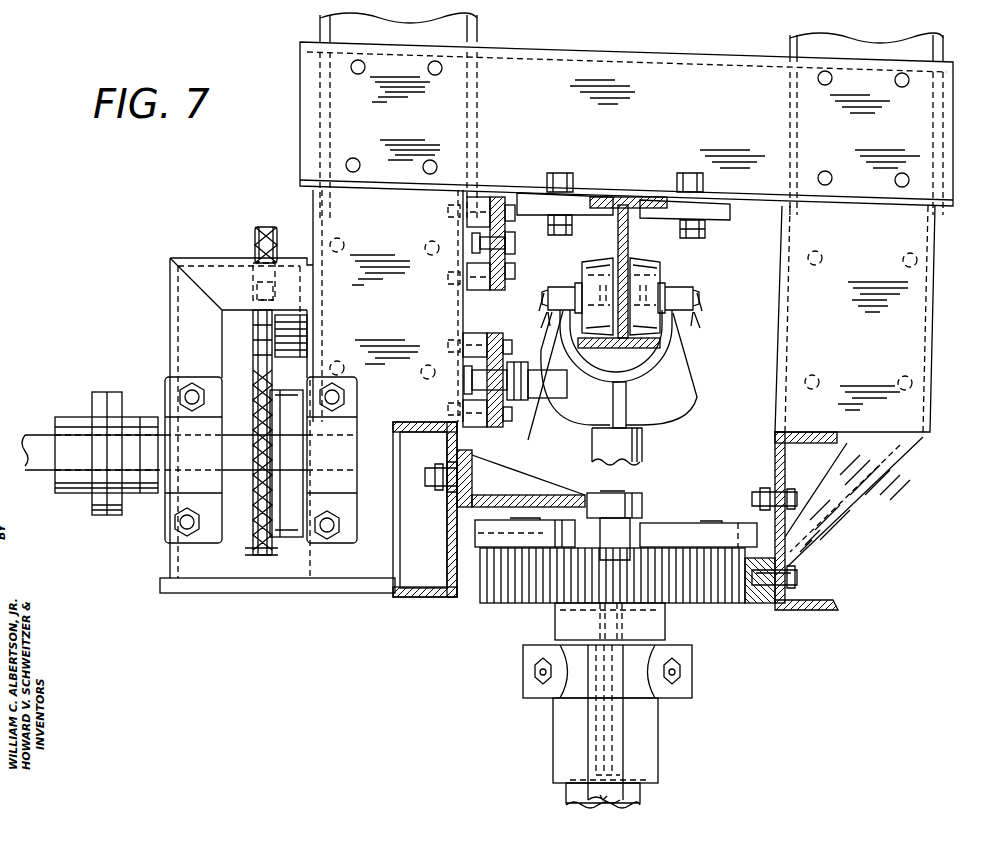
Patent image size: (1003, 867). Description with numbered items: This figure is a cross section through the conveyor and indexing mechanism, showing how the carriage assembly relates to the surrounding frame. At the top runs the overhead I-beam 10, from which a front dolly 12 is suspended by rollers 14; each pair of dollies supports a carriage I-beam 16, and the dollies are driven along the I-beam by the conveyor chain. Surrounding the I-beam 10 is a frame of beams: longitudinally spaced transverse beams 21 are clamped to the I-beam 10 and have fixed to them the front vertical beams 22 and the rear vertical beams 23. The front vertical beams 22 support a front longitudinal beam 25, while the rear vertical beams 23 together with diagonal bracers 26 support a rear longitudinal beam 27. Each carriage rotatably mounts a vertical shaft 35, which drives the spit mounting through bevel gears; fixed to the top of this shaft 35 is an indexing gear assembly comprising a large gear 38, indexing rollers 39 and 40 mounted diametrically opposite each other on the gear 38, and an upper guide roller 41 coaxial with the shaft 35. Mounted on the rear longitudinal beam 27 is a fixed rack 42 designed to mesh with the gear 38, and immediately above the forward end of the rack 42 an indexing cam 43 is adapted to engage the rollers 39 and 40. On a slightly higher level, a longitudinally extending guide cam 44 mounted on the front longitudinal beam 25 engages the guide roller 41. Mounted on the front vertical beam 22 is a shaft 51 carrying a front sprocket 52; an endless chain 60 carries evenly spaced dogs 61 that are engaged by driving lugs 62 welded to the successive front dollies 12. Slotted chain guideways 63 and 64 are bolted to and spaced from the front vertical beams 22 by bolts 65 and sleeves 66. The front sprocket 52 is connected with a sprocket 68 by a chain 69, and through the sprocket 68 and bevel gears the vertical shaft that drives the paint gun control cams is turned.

The overhead I-beam 10 is at (628, 268).
The dolly 12 is at (697, 410).
The rollers 14 is at (600, 262).
The carriage I-beam 16 is at (612, 728).
The transverse beams 21 is at (634, 52).
The front vertical beams 22 is at (322, 40).
The rear vertical beams 23 is at (950, 54).
The front longitudinal beam 25 is at (430, 598).
The diagonal bracers 26 is at (865, 503).
The rear longitudinal beam 27 is at (828, 612).
The vertical shaft 35 is at (594, 735).
The large gear 38 is at (500, 598).
The indexing roller 39 is at (475, 528).
The indexing roller 40 is at (736, 524).
The upper guide roller 41 is at (646, 494).
The fixed rack 42 is at (758, 603).
The indexing cam 43 is at (655, 523).
The guide cam 44 is at (550, 494).
The shaft 51 is at (308, 325).
The front sprocket 52 is at (264, 227).
The endless chain 60 is at (515, 244).
The dogs 61 is at (516, 362).
The driving lugs 62 is at (532, 398).
The slotted chain guideway 63 is at (506, 220).
The slotted chain guideway 64 is at (498, 336).
The bolts 65 is at (448, 211).
The sleeves 66 is at (483, 205).
The sprocket 68 is at (260, 555).
The chain 69 is at (253, 352).